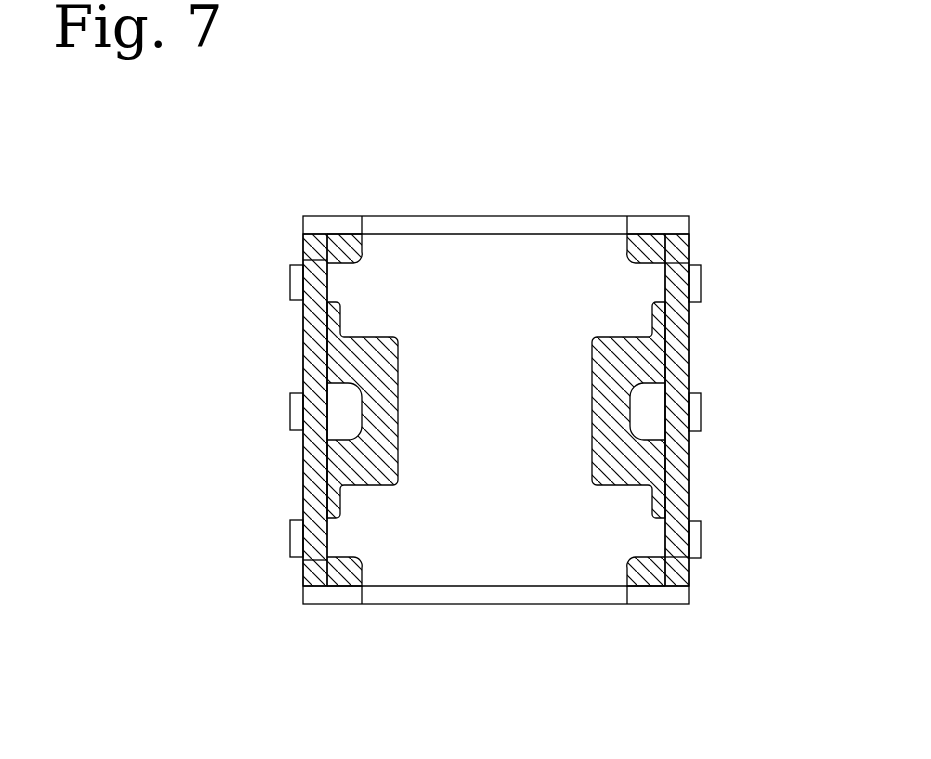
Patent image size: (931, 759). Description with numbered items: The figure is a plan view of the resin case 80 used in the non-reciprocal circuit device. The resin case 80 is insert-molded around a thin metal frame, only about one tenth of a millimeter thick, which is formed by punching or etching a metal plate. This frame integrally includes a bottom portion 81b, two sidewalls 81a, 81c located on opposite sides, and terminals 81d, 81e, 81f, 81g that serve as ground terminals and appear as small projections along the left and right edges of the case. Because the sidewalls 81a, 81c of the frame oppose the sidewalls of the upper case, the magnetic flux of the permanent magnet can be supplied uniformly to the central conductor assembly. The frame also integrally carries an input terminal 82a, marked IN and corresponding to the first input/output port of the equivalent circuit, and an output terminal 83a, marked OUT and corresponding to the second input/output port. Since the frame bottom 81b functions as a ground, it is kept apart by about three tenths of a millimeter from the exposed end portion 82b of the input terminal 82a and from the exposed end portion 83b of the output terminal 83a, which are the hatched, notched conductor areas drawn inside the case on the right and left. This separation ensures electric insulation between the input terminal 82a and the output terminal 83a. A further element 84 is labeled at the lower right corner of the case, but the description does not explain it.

The resin case 80 is at (330, 205).
The sidewall 81a is at (490, 598).
The bottom portion 81b is at (550, 275).
The sidewall 81c is at (466, 227).
The terminal 81d is at (703, 538).
The terminal 81e is at (702, 283).
The terminal 81f is at (290, 283).
The terminal 81g is at (290, 542).
The input terminal 82a is at (703, 408).
The exposed end portion of the input terminal 82b is at (648, 395).
The output terminal 83a is at (290, 412).
The exposed end portion of the output terminal 83b is at (330, 393).
The frame ground conductor 84 is at (658, 598).